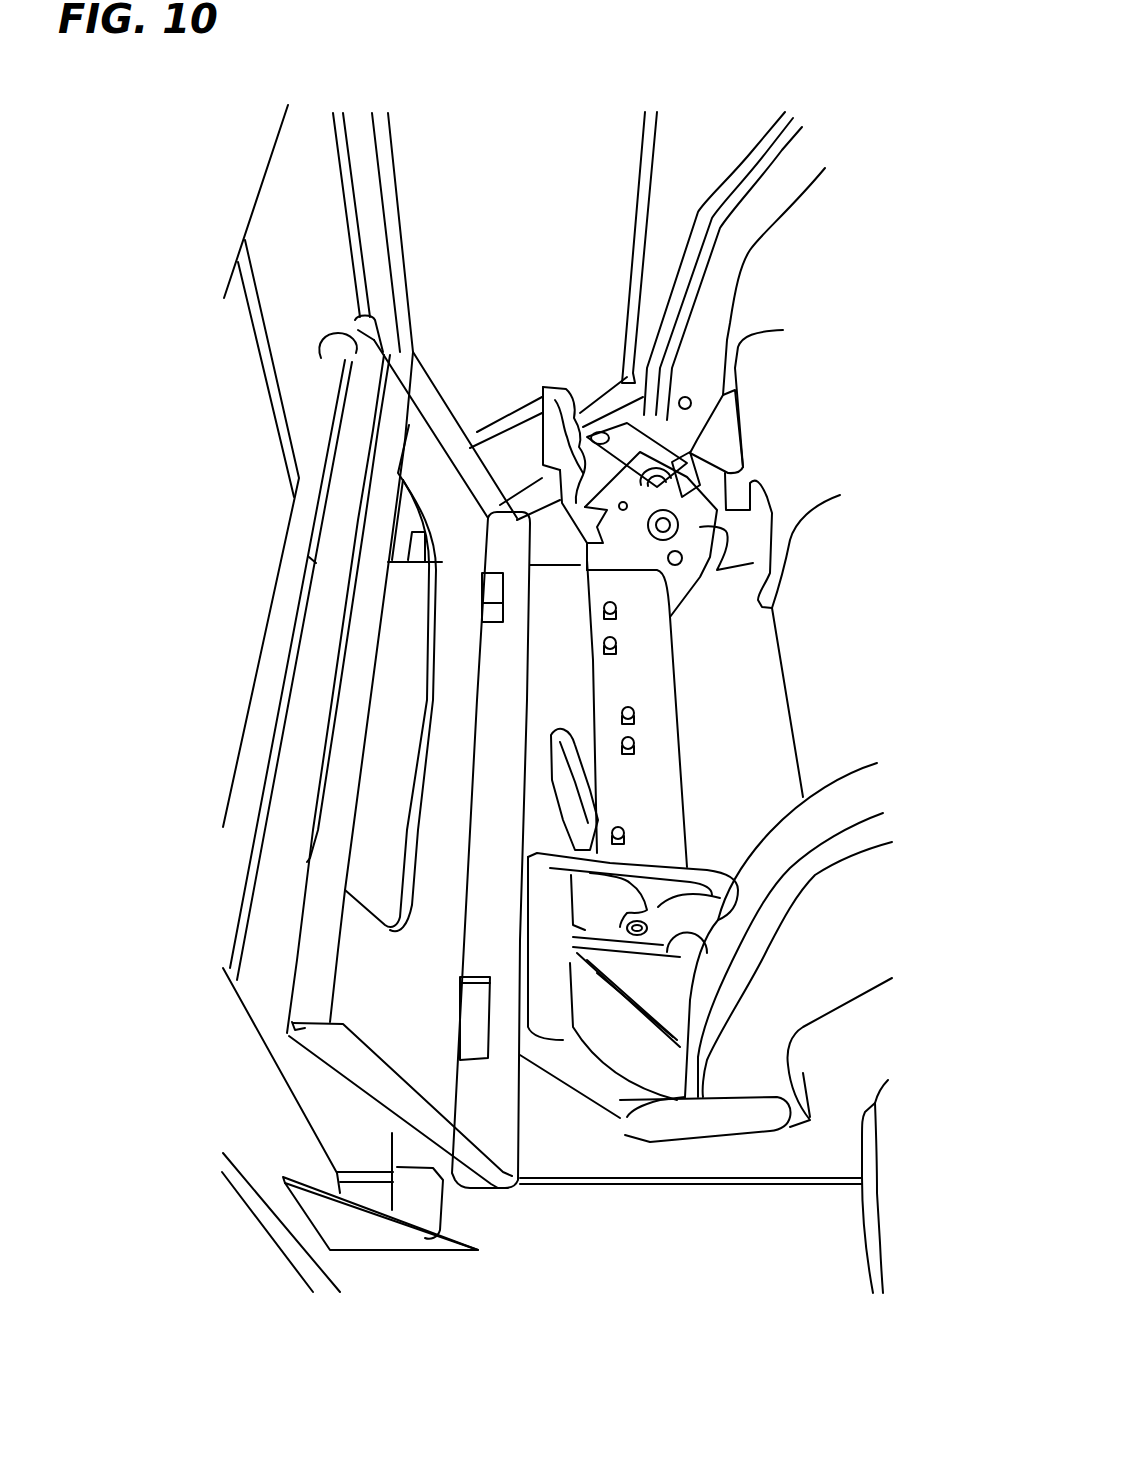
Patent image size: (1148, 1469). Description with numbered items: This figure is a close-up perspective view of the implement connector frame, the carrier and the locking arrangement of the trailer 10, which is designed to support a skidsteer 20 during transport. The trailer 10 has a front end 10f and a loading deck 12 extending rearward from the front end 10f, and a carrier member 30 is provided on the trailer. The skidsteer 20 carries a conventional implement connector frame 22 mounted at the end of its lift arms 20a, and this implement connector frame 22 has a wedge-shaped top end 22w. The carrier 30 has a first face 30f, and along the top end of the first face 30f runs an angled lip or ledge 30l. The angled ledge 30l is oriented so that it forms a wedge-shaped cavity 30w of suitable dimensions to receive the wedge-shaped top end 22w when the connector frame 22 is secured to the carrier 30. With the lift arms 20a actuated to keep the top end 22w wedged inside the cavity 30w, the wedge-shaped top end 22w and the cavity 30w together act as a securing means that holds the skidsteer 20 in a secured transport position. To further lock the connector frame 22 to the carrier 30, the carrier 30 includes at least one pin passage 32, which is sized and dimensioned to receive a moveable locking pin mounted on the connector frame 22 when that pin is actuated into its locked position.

The trailer 10 is at (722, 102).
The front end 10f is at (337, 237).
The loading deck 12 is at (806, 1244).
The skidsteer 20 is at (703, 329).
The lift arms 20a is at (684, 634).
The implement connector frame 22 is at (560, 368).
The wedge-shaped top end 22w is at (564, 445).
The carrier member 30 is at (425, 348).
The angled ledge 30l is at (360, 693).
The first face 30f is at (453, 748).
The wedge-shaped cavity 30w is at (340, 1012).
The pin passage 32 is at (517, 593).